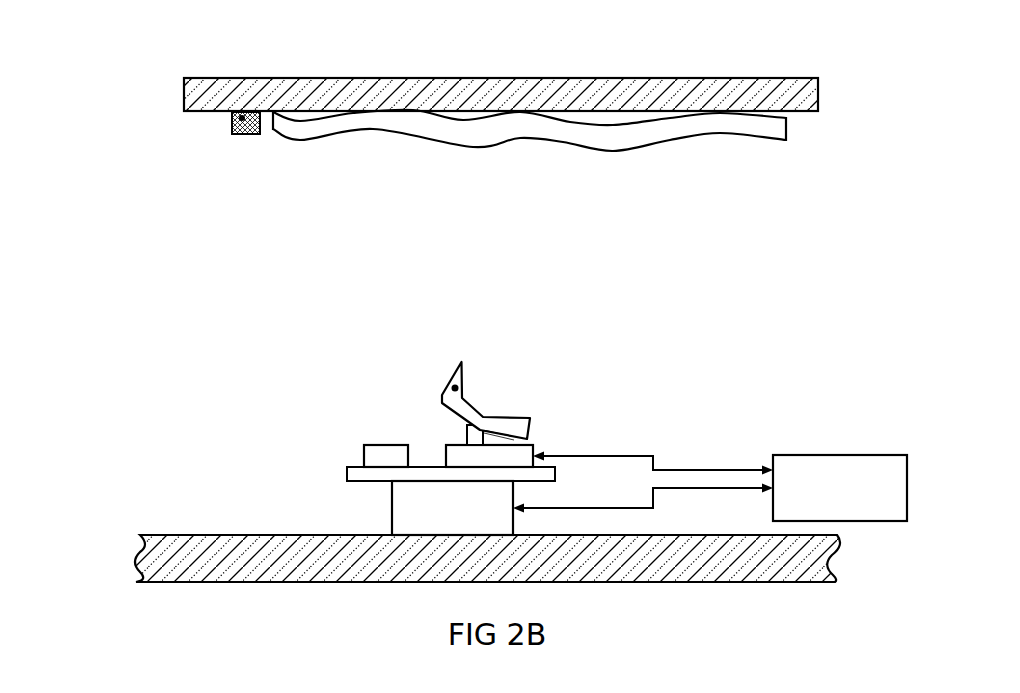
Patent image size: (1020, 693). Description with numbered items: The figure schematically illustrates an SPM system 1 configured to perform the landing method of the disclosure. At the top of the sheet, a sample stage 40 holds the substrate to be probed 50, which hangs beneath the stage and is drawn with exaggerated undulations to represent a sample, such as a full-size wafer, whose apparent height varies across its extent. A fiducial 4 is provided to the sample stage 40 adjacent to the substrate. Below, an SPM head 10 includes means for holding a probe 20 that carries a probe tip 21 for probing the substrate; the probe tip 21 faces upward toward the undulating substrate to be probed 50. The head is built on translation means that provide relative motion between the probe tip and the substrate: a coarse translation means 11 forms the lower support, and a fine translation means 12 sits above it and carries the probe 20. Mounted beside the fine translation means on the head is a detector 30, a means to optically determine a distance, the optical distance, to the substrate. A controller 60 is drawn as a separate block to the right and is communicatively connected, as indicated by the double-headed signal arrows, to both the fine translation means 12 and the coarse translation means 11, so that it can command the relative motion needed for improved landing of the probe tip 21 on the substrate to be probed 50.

The SPM system 1 is at (118, 84).
The fiducial 4 is at (232, 123).
The sample stage 40 is at (833, 94).
The substrate to be probed 50 is at (807, 132).
The SPM head 10 is at (307, 421).
The coarse translation means 11 is at (452, 508).
The fine translation means 12 is at (489, 457).
The detector 30 is at (386, 457).
The probe 20 is at (487, 391).
The probe tip 21 is at (453, 388).
The controller 60 is at (710, 487).